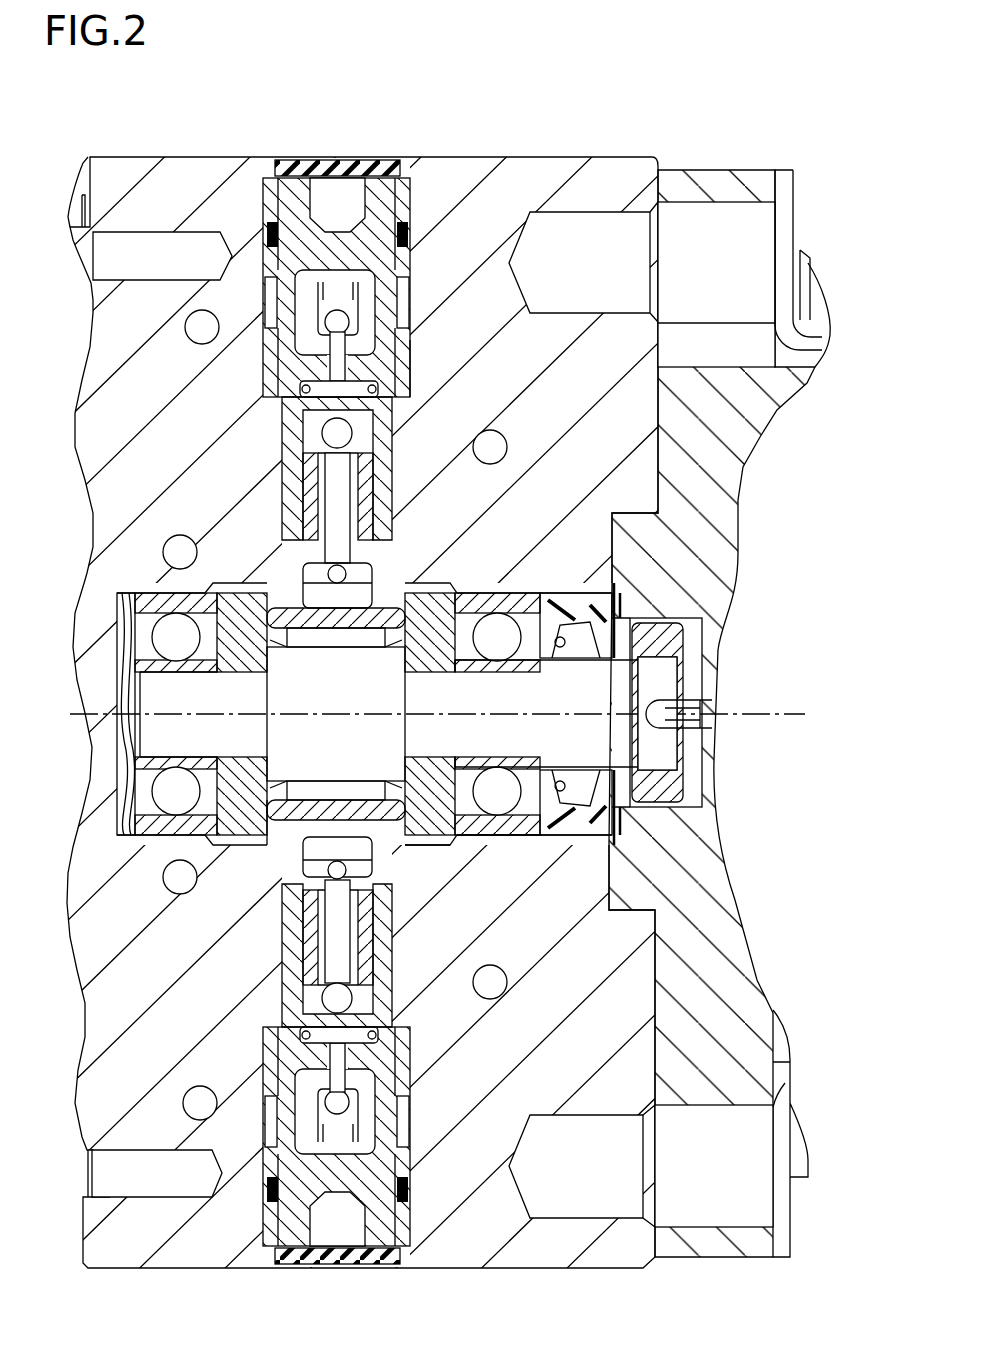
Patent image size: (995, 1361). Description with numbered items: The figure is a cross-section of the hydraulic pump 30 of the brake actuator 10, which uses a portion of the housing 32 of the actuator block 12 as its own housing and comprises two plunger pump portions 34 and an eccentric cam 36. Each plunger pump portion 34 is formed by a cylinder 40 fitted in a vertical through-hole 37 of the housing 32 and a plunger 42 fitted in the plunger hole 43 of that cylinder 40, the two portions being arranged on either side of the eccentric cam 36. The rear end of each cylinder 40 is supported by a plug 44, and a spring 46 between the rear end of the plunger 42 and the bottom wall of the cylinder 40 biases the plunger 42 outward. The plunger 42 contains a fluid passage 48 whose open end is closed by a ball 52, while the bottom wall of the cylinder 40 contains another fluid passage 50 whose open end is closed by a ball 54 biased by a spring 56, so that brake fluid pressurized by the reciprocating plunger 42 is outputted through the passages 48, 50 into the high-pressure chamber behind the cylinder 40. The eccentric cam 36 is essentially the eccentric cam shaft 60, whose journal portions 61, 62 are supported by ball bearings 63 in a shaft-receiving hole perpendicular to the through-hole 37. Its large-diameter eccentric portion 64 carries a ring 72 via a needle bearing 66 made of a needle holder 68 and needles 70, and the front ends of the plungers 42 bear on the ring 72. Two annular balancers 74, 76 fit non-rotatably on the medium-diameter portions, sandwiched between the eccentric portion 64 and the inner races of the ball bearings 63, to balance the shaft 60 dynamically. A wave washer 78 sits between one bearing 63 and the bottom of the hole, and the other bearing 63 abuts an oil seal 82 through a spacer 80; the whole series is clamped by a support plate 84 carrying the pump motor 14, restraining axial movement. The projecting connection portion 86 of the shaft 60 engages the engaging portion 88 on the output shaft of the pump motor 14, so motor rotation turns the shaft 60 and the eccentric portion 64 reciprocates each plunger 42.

The brake actuator 10 is at (464, 680).
The actuator block 12 is at (476, 95).
The pump motor 14 is at (840, 304).
The hydraulic pump 30 is at (209, 116).
The housing 32 is at (524, 185).
The plunger pump portion 34 is at (326, 712).
The eccentric cam 36 is at (415, 843).
The through-hole 37 is at (415, 343).
The cylinder 40 is at (385, 449).
The plunger 42 is at (372, 495).
The plunger hole 43 is at (367, 486).
The plug 44 is at (386, 263).
The spring 46 is at (373, 395).
The fluid passage 48 is at (333, 542).
The fluid passage 50 is at (332, 378).
The ball 52 is at (335, 436).
The ball 54 is at (336, 321).
The spring 56 is at (358, 305).
The eccentric cam shaft 60 is at (627, 690).
The journal portion 61 is at (613, 683).
The journal portion 62 is at (152, 696).
The ball bearing 63 is at (152, 826).
The eccentric portion 64 is at (176, 836).
The needle bearing 66 is at (246, 818).
The needle holder 68 is at (436, 833).
The needle 70 is at (366, 636).
The ring 72 is at (280, 815).
The balancer 74 is at (433, 601).
The balancer 76 is at (237, 607).
The wave washer 78 is at (127, 620).
The spacer 80 is at (555, 588).
The oil seal 82 is at (619, 576).
The support plate 84 is at (709, 561).
The connection portion 86 is at (658, 749).
The engaging portion 88 is at (720, 708).